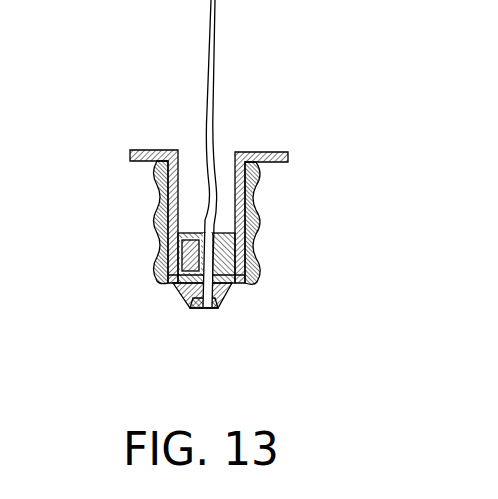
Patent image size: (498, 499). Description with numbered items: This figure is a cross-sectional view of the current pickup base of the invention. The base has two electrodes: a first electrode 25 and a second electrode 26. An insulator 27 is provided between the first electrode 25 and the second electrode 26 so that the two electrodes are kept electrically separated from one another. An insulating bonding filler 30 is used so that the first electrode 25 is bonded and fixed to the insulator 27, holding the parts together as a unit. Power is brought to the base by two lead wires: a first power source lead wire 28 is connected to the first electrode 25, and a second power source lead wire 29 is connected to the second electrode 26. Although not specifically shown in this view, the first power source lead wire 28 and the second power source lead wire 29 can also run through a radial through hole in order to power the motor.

The first electrode 25 is at (158, 184).
The insulating bonding filler 30 is at (158, 250).
The first power source lead wire 28 is at (205, 217).
The second electrode 26 is at (186, 305).
The insulator 27 is at (218, 300).
The second power source lead wire 29 is at (216, 178).